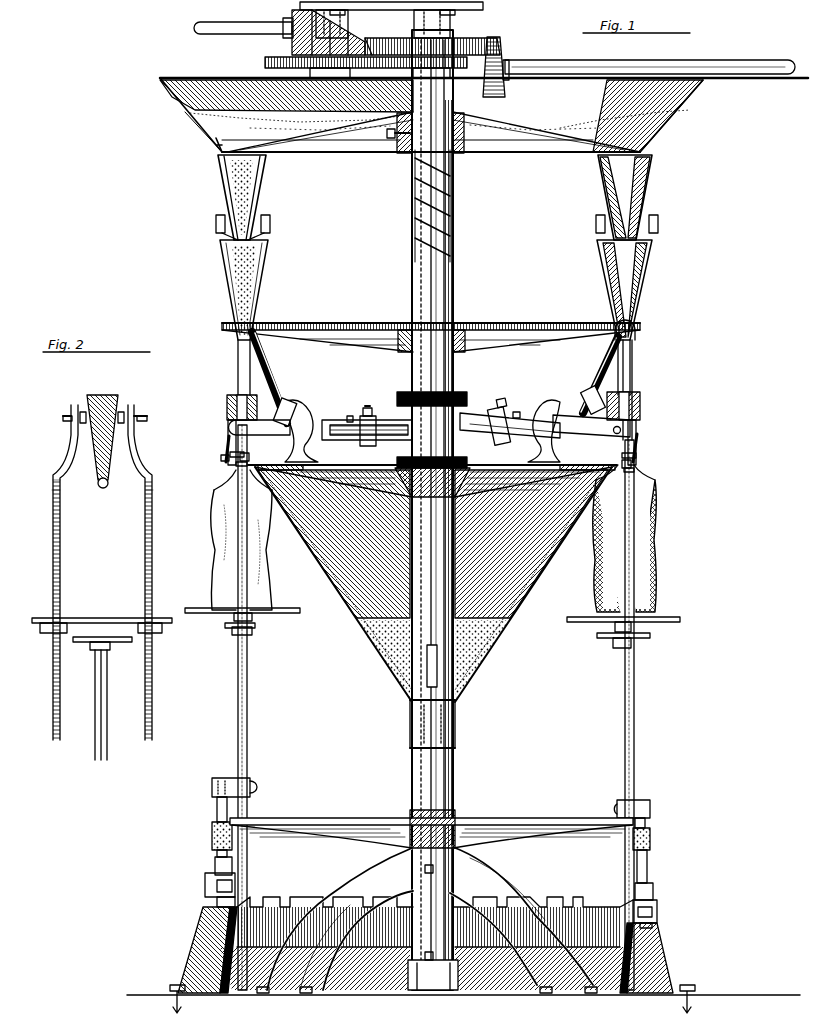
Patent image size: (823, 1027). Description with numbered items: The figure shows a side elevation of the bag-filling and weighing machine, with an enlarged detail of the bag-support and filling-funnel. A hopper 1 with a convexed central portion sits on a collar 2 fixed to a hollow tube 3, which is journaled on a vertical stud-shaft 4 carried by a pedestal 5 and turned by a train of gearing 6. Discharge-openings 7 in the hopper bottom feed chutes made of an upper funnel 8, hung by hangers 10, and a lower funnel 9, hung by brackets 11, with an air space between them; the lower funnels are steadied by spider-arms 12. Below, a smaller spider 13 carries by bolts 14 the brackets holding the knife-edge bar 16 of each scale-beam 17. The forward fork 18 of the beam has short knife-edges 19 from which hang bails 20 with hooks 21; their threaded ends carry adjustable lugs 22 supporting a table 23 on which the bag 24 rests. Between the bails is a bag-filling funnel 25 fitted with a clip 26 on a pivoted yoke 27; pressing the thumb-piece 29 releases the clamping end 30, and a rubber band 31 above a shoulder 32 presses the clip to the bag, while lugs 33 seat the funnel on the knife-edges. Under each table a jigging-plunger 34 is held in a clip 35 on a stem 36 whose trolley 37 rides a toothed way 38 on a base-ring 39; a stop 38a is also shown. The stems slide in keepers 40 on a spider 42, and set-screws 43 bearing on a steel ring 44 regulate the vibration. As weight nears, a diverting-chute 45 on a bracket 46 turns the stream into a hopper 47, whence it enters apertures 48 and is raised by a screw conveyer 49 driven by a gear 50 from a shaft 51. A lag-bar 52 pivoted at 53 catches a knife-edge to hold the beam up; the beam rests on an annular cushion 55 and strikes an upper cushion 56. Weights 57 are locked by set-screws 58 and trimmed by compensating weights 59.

In FIG. 1, the hopper 1 is at (180, 90).
In FIG. 1, the collar 2 is at (468, 150).
In FIG. 1, the hollow shaft or tube 3 is at (235, 311).
In FIG. 1, the vertical stud-shaft 4 is at (447, 928).
In FIG. 1, the pedestal 5 is at (486, 870).
In FIG. 1, the train of gearing 6 is at (707, 410).
In FIG. 1, the discharge-openings 7 is at (222, 168).
In FIG. 1, the upper funnel section 8 is at (262, 193).
In FIG. 1, the lower funnel section 9 is at (262, 272).
In FIG. 1, the hangers 10 is at (215, 148).
In FIG. 1, the hangers or brackets 11 is at (264, 228).
In FIG. 1, the spider-arms 12 is at (330, 315).
In FIG. 1, the smaller spider 13 is at (512, 478).
In FIG. 1, the bolts 14 is at (328, 418).
In FIG. 1, the knife-edge bar 16 is at (305, 402).
In FIG. 1, the scale-beam 17 is at (340, 424).
In FIG. 1, the fork 18 is at (430, 435).
In FIG. 1, the short knife-edges 19 is at (230, 420).
In FIG. 2, the short knife-edges 19 is at (63, 418).
In FIG. 1, the hangers or bails 20 is at (248, 676).
In FIG. 2, the hangers or bails 20 is at (140, 535).
In FIG. 2, the hook 21 is at (70, 416).
In FIG. 1, the adjustable lugs 22 is at (252, 631).
In FIG. 2, the adjustable lugs 22 is at (50, 633).
In FIG. 1, the platform or table 23 is at (215, 608).
In FIG. 2, the platform or table 23 is at (110, 618).
In FIG. 1, the bag 24 is at (269, 560).
In FIG. 1, the bag filling and supporting funnel 25 is at (238, 394).
In FIG. 2, the bag filling and supporting funnel 25 is at (116, 482).
In FIG. 1, the clip or clamp 26 is at (222, 462).
In FIG. 1, the yoke 27 is at (232, 456).
In FIG. 1, the thumb-piece 29 is at (228, 446).
In FIG. 1, the lower clamping end 30 is at (228, 484).
In FIG. 1, the rubber band 31 is at (249, 457).
In FIG. 1, the shoulder or stop 32 is at (238, 466).
In FIG. 2, the lugs 33 is at (83, 411).
In FIG. 1, the jigging-plunger 34 is at (262, 624).
In FIG. 2, the jigging-plunger 34 is at (107, 660).
In FIG. 1, the clip 35 is at (250, 781).
In FIG. 1, the vertical stem 36 is at (217, 812).
In FIG. 1, the trolley or antifriction-roller 37 is at (235, 882).
In FIG. 1, the toothed or corrugated way 38 is at (320, 887).
In FIG. 1, the stop 38a is at (655, 925).
In FIG. 1, the base-ring 39 is at (206, 928).
In FIG. 1, the keepers or boxes 40 is at (212, 840).
In FIG. 1, the spider 42 is at (352, 813).
In FIG. 1, the set-screws or stops 43 is at (215, 869).
In FIG. 1, the steel ring 44 is at (217, 901).
In FIG. 1, the diverting-chute 45 is at (275, 370).
In FIG. 1, the bracket 46 is at (292, 400).
In FIG. 1, the hopper 47 is at (520, 600).
In FIG. 1, the apertures 48 is at (426, 680).
In FIG. 1, the vertical screw conveyer 49 is at (453, 195).
In FIG. 1, the gear 50 is at (403, 20).
In FIG. 1, the shaft 51 is at (540, 60).
In FIG. 1, the lag-bar 52 is at (633, 372).
In FIG. 1, the pivot 53 is at (637, 338).
In FIG. 1, the annular cushion 55 is at (478, 447).
In FIG. 1, the upper cushion 56 is at (470, 415).
In FIG. 1, the weights 57 is at (405, 392).
In FIG. 1, the set-screws 58 is at (378, 396).
In FIG. 1, the compensating weights 59 is at (352, 416).